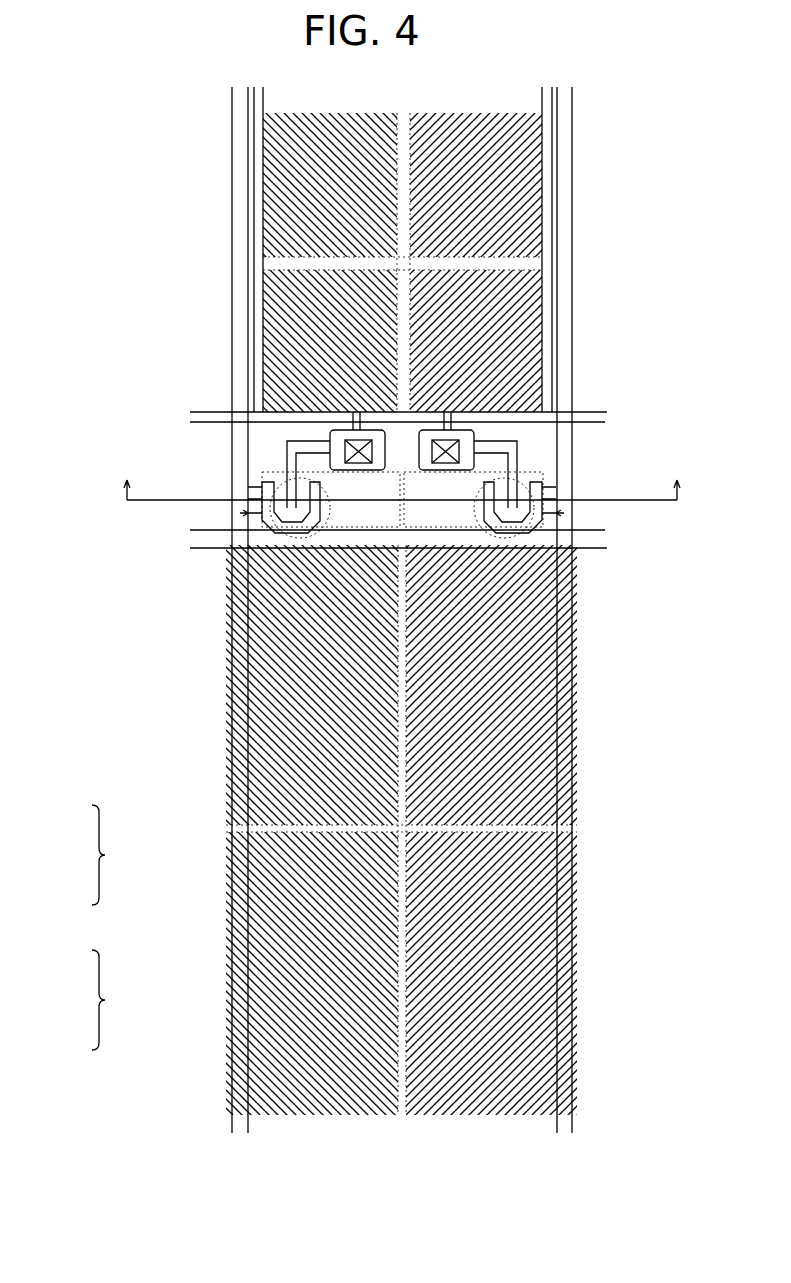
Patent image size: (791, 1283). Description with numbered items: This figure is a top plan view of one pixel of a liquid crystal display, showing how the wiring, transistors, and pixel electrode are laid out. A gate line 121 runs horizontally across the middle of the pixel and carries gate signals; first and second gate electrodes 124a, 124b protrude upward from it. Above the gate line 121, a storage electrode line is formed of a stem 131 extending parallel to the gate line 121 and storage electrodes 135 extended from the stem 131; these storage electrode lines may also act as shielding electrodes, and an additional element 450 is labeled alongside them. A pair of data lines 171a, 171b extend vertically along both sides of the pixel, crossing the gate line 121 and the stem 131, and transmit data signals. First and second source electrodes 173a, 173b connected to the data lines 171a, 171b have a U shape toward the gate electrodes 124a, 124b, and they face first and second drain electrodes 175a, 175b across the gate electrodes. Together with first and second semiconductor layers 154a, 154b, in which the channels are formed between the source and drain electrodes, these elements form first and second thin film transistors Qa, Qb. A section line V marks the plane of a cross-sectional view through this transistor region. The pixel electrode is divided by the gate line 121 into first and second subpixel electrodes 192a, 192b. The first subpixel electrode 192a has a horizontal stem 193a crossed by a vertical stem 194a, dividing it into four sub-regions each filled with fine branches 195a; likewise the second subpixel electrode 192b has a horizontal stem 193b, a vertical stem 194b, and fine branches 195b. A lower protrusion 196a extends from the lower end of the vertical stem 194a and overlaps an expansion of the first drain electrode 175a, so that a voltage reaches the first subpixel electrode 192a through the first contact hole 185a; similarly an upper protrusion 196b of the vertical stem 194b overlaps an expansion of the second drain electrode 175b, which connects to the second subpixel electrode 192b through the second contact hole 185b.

The first data line 171a is at (248, 132).
The second data line 171b is at (557, 132).
The shielding electrode 450 is at (552, 222).
The storage electrode 135 is at (557, 306).
The fine branches of first subpixel electrode 195a is at (275, 205).
The vertical stem of first subpixel electrode 194a is at (405, 181).
The horizontal stem of first subpixel electrode 193a is at (497, 262).
The stem of storage electrode line 131 is at (605, 422).
The gate line 121 is at (607, 540).
The first gate electrode 124a is at (265, 468).
The second gate electrode 124b is at (545, 470).
The first semiconductor layer 154a is at (300, 545).
The second semiconductor layer 154b is at (520, 545).
The first contact hole 185a is at (353, 400).
The second contact hole 185b is at (448, 405).
The first drain electrode 175a is at (330, 447).
The second drain electrode 175b is at (474, 445).
The first source electrode 173a is at (262, 495).
The second source electrode 173b is at (542, 495).
The first thin film transistor Qa is at (240, 513).
The second thin film transistor Qb is at (564, 513).
The section line V is at (401, 490).
The lower protrusion 196a is at (330, 560).
The upper protrusion 196b is at (480, 560).
The fine branches of second subpixel electrode 195b is at (262, 690).
The vertical stem of second subpixel electrode 194b is at (400, 745).
The horizontal stem of second subpixel electrode 193b is at (520, 828).
The first subpixel electrode 192a is at (91, 855).
The second subpixel electrode 192b is at (92, 1000).